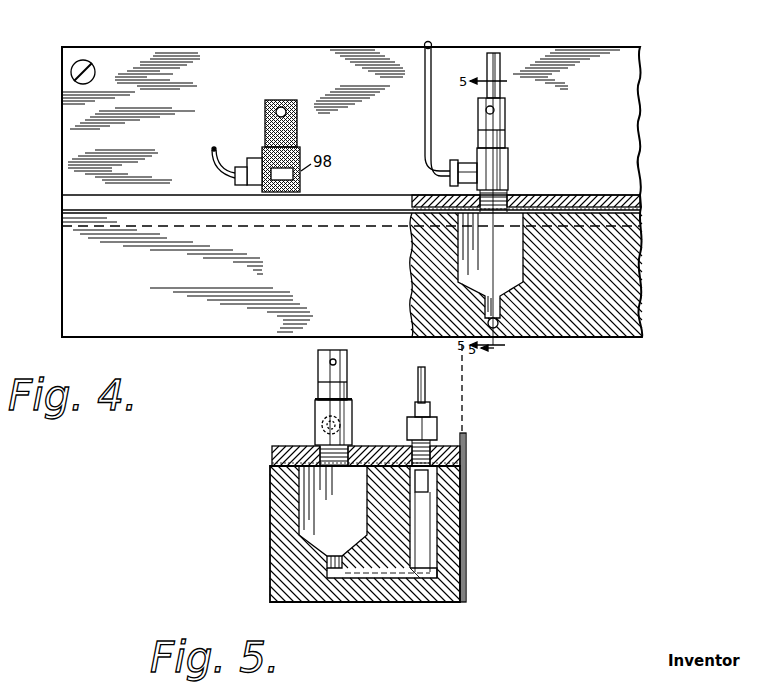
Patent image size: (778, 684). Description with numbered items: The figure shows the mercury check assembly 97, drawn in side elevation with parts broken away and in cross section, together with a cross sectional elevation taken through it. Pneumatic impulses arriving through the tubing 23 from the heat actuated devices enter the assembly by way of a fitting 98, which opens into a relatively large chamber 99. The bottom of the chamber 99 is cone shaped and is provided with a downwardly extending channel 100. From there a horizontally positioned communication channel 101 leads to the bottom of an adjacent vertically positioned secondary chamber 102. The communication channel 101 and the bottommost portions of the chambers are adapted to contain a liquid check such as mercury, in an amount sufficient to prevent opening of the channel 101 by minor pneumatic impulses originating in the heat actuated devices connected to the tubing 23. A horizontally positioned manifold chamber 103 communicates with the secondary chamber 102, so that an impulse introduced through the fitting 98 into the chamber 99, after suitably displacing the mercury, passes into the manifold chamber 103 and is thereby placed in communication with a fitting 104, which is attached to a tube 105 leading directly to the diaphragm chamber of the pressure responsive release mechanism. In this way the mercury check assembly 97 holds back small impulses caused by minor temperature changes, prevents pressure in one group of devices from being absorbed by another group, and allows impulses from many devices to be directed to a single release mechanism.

In FIG. 4, the tubing 23 is at (435, 45).
In FIG. 5, the tubing 23 is at (314, 427).
In FIG. 4, the mercury check assembly 97 is at (345, 276).
In FIG. 5, the mercury check assembly 97 is at (272, 520).
In FIG. 4, the fitting 98 is at (511, 170).
In FIG. 5, the fitting 98 is at (353, 437).
In FIG. 4, the chamber 99 is at (497, 262).
In FIG. 5, the chamber 99 is at (322, 520).
In FIG. 4, the channel 100 is at (503, 326).
In FIG. 5, the channel 100 is at (341, 555).
In FIG. 5, the communication channel 101 is at (379, 579).
In FIG. 5, the secondary chamber 102 is at (428, 547).
In FIG. 4, the manifold chamber 103 is at (641, 210).
In FIG. 5, the manifold chamber 103 is at (428, 484).
In FIG. 5, the fitting 104 is at (437, 430).
In FIG. 4, the tube 105 is at (497, 70).
In FIG. 5, the tube 105 is at (427, 400).